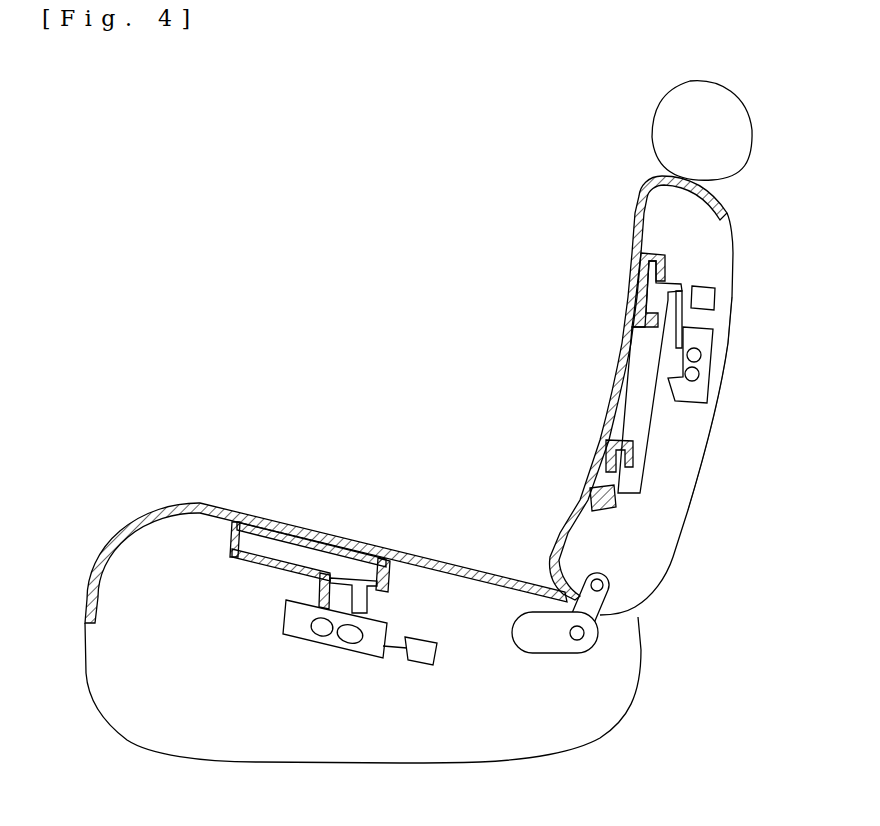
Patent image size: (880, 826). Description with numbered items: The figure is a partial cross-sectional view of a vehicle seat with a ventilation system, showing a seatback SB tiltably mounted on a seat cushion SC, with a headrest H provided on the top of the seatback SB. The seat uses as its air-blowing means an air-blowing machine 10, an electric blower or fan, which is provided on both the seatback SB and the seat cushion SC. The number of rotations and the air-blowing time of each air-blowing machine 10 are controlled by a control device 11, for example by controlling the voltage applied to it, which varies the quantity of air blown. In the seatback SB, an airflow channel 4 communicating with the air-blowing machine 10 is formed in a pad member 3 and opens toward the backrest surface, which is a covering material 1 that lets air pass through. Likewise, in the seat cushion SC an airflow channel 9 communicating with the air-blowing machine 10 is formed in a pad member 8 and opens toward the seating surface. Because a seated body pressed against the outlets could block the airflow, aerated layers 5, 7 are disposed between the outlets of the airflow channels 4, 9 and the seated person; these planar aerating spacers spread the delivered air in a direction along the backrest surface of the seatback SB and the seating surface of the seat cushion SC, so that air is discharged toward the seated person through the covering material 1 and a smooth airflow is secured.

The headrest H is at (752, 146).
The seatback SB is at (577, 444).
The seat cushion SC is at (253, 488).
The covering material 1 is at (630, 288).
The pad member 3 is at (652, 512).
The airflow channel 4 is at (681, 283).
The aerated layer 5 is at (655, 253).
The aerated layer 7 is at (313, 525).
The pad member 8 is at (265, 596).
The airflow channel 9 is at (360, 580).
The air-blowing machine 10 is at (699, 372).
The control device 11 is at (716, 298).